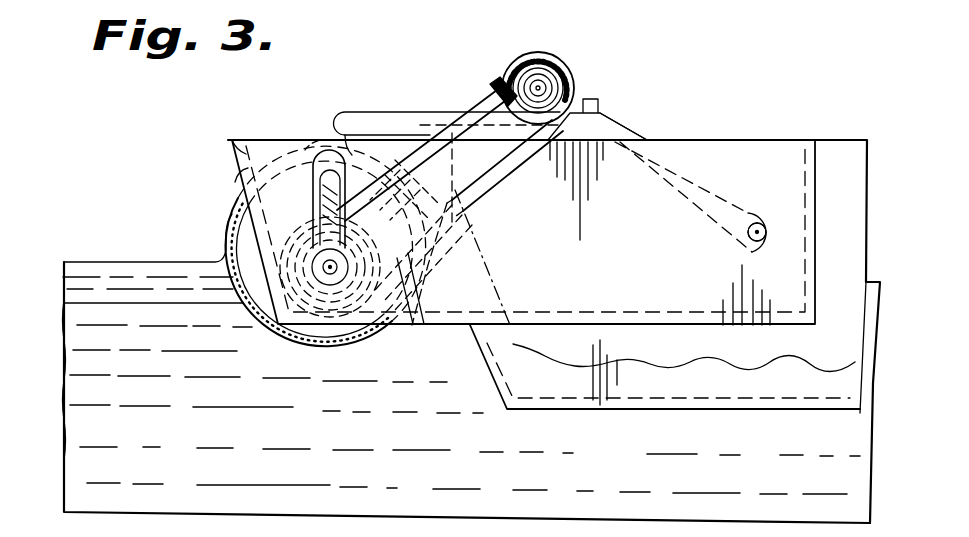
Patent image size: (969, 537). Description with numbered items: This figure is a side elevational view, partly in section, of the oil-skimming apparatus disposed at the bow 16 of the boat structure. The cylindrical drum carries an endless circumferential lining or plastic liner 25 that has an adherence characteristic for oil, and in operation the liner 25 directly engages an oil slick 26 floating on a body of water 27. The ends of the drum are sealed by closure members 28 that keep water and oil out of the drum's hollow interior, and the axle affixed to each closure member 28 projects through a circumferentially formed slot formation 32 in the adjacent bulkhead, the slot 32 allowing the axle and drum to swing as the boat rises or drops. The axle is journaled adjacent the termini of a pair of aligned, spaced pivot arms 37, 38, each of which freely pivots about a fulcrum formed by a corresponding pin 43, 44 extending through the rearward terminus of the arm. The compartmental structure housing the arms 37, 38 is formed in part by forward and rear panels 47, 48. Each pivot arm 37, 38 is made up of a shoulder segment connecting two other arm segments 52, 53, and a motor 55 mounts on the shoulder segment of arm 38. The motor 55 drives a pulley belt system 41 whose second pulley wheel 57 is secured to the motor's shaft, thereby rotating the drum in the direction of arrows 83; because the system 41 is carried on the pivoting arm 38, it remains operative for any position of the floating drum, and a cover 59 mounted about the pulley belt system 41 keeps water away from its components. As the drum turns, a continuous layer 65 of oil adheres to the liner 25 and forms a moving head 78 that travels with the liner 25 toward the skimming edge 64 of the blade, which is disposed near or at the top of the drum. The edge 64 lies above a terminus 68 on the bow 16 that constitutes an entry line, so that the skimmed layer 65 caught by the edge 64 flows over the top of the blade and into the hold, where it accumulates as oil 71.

The bow 16 is at (497, 385).
The lining or plastic liner 25 is at (388, 333).
The oil slick 26 is at (152, 276).
The body of water 27 is at (178, 424).
The closure members 28 is at (349, 354).
The slot formation 32 is at (312, 167).
The pivot arm 37 is at (394, 108).
The pivot arm 38 is at (386, 111).
The pulley belt system 41 is at (490, 168).
The pin 43 is at (752, 240).
The pin 44 is at (752, 240).
The forward panel 47 is at (235, 155).
The rear panel 48 is at (818, 172).
The arm segment 52 is at (341, 112).
The arm segment 53 is at (615, 128).
The motor 55 is at (572, 62).
The second pulley wheel 57 is at (503, 72).
The cover 59 is at (478, 115).
The skimming edge 64 is at (335, 135).
The layer of oil 65 is at (235, 182).
The terminus 68 is at (469, 264).
The oil 71 is at (678, 345).
The moving head 78 is at (316, 150).
The arrows 83 is at (217, 237).